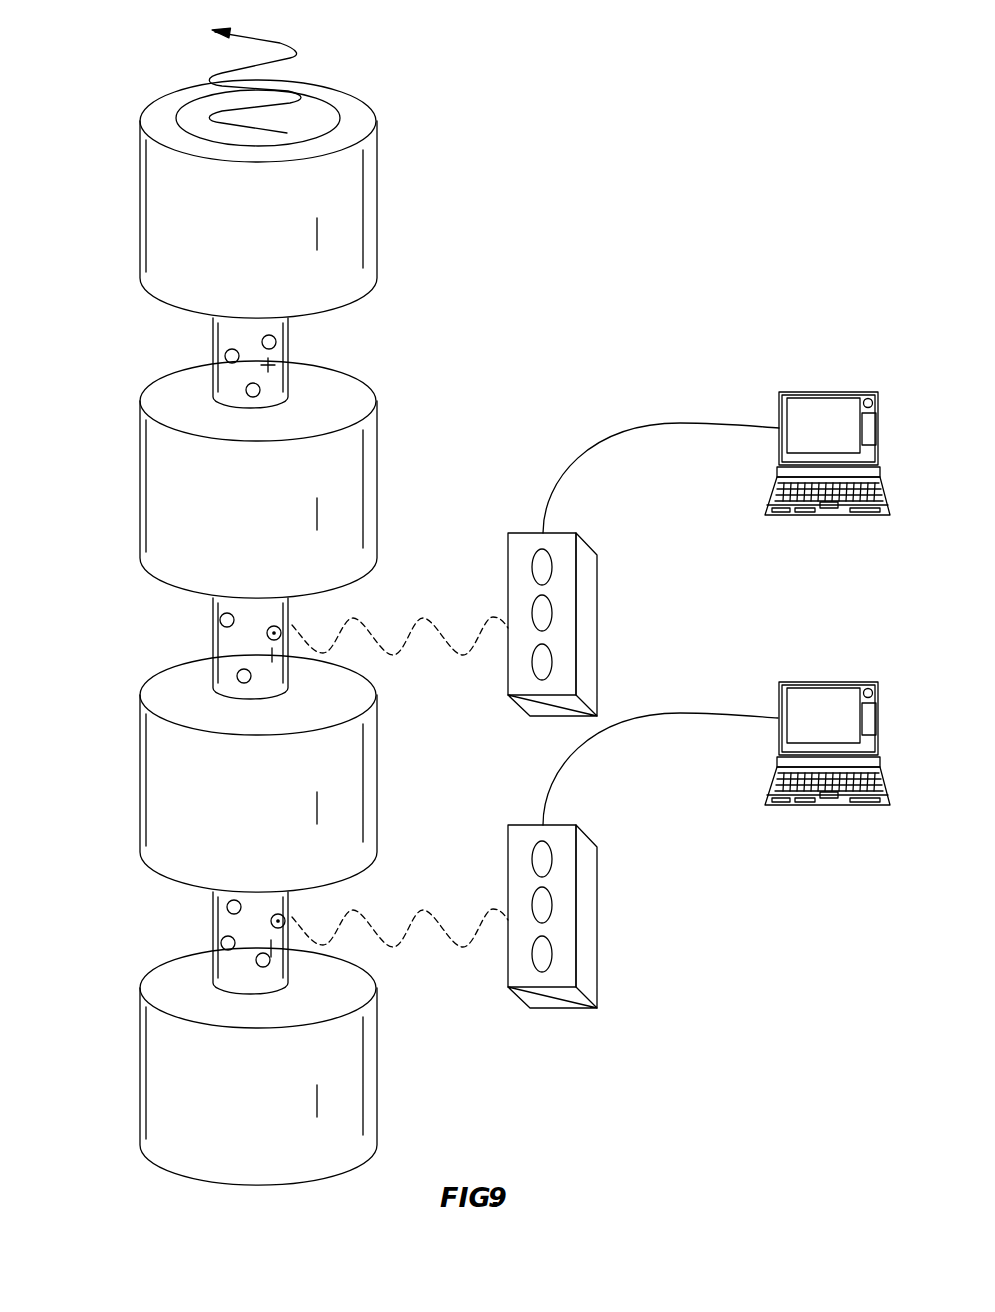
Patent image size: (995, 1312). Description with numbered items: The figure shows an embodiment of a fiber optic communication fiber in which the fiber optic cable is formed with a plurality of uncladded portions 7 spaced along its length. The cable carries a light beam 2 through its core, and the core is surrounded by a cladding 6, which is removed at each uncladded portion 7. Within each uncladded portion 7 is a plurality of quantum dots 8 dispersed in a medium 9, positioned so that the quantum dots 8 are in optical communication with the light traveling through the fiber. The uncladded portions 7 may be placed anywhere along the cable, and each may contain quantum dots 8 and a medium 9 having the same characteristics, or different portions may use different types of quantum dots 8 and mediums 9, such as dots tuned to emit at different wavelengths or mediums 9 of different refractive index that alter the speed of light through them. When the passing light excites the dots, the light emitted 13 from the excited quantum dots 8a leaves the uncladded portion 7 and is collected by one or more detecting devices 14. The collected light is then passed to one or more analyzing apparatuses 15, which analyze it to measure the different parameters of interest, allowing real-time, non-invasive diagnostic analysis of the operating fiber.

The light beam 2 is at (281, 43).
The cladding 6 is at (343, 106).
The uncladded portion 7 is at (73, 297).
The quantum dots 8 is at (275, 338).
The medium 9 is at (262, 364).
The excited quantum dots 8a is at (268, 633).
The light emitted 13 is at (412, 641).
The detecting device 14 is at (520, 533).
The analyzing apparatus 15 is at (812, 392).